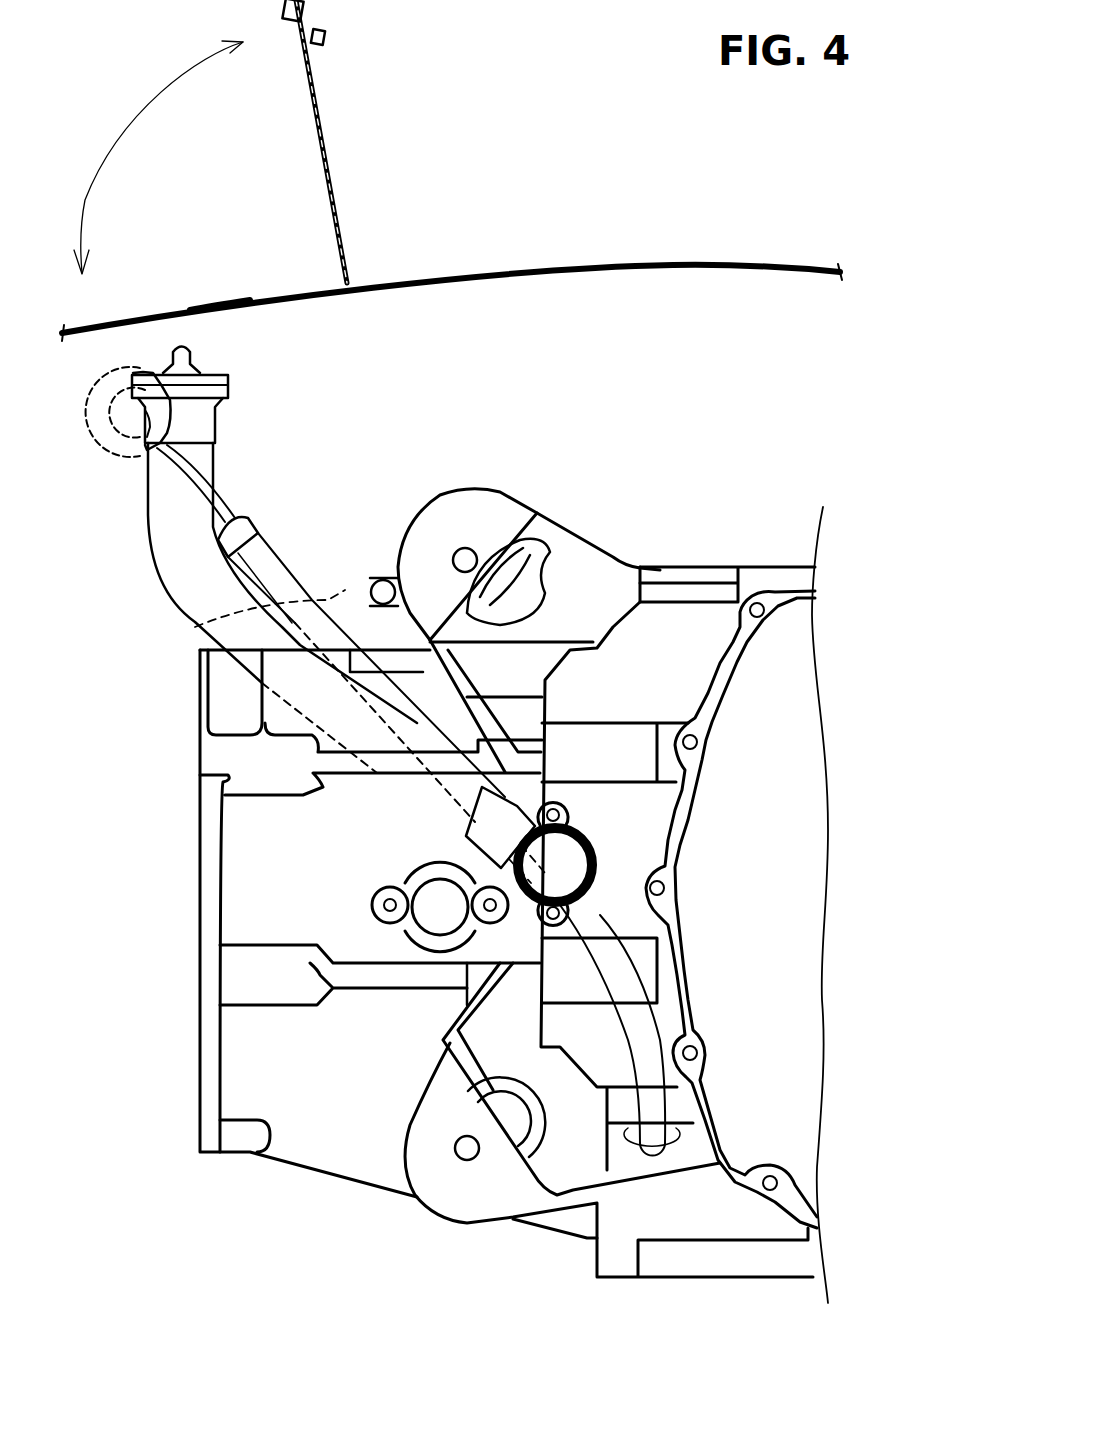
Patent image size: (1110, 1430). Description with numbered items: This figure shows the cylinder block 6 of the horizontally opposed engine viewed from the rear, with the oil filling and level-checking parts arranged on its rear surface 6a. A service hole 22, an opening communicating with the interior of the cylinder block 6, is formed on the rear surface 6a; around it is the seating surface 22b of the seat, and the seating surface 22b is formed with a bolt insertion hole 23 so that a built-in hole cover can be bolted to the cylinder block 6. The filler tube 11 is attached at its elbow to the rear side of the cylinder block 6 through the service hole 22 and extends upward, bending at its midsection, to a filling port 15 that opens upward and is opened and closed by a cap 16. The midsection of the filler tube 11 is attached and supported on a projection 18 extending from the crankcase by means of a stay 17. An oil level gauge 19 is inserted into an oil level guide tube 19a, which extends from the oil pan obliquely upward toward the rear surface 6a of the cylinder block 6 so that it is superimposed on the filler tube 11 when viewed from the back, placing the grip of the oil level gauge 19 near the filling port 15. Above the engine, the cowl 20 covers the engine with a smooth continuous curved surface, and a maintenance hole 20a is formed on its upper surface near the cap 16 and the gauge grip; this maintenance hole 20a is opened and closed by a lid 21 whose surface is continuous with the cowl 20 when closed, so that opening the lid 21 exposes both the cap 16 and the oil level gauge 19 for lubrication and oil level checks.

The cylinder block 6 is at (232, 1073).
The rear surface 6a is at (655, 810).
The filler tube 11 is at (148, 505).
The filling port 15 is at (208, 417).
The cap 16 is at (200, 372).
The stay 17 is at (330, 587).
The projection 18 is at (485, 492).
The oil level gauge 19 is at (133, 365).
The oil level guide tube 19a is at (200, 622).
The cowl 20 is at (585, 265).
The maintenance hole 20a is at (225, 300).
The lid 21 is at (325, 105).
The service hole 22 is at (573, 873).
The seating surface 22b is at (565, 805).
The bolt insertion hole 23 is at (567, 813).